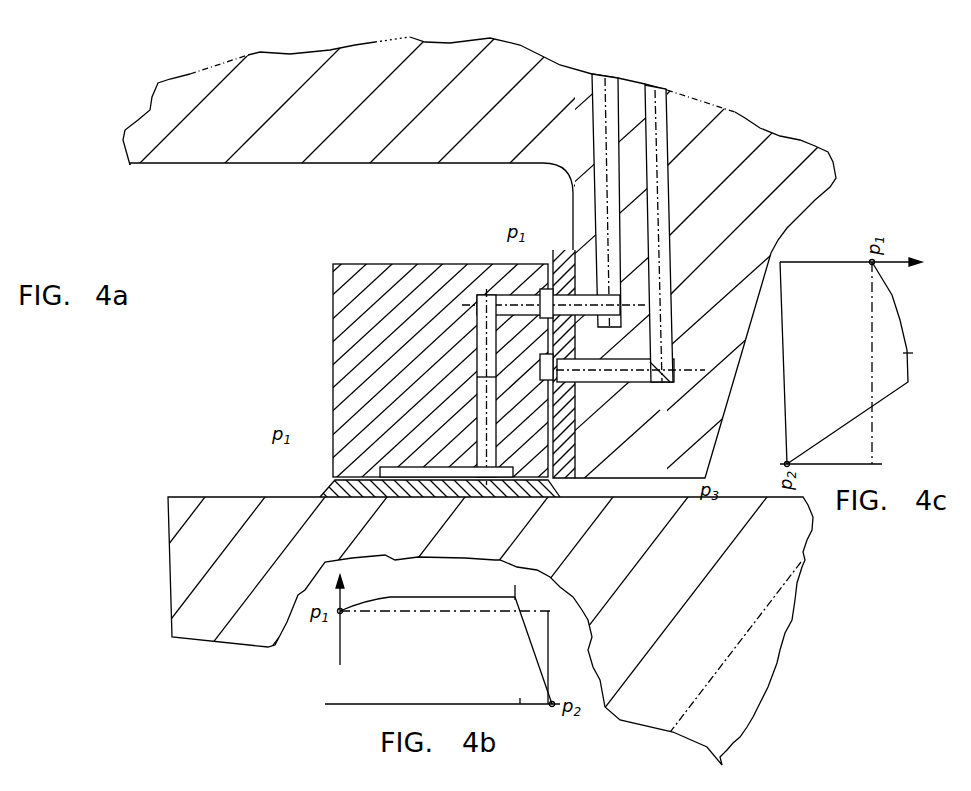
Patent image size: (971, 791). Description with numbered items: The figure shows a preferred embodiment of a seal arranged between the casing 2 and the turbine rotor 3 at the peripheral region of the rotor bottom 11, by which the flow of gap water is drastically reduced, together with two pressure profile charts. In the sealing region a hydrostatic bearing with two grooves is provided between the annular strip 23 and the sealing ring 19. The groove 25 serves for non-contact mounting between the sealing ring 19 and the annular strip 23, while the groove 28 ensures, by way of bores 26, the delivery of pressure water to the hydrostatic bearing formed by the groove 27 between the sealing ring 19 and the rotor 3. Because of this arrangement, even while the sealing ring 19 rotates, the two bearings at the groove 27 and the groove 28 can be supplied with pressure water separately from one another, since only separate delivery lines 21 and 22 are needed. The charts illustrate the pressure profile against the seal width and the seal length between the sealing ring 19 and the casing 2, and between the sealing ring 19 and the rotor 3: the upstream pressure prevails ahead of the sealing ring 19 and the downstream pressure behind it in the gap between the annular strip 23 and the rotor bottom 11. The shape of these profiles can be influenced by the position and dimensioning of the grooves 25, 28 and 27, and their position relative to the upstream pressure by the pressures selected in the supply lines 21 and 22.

The casing 2 is at (210, 123).
The turbine rotor 3 is at (205, 537).
The rotor bottom 11 is at (652, 581).
The sealing ring 19 is at (398, 339).
The delivery line 21 is at (605, 76).
The delivery line 22 is at (668, 88).
The annular strip 23 is at (640, 448).
The groove 25 is at (477, 322).
The bores 26 is at (477, 377).
The groove 27 is at (447, 472).
The groove 28 is at (545, 300).